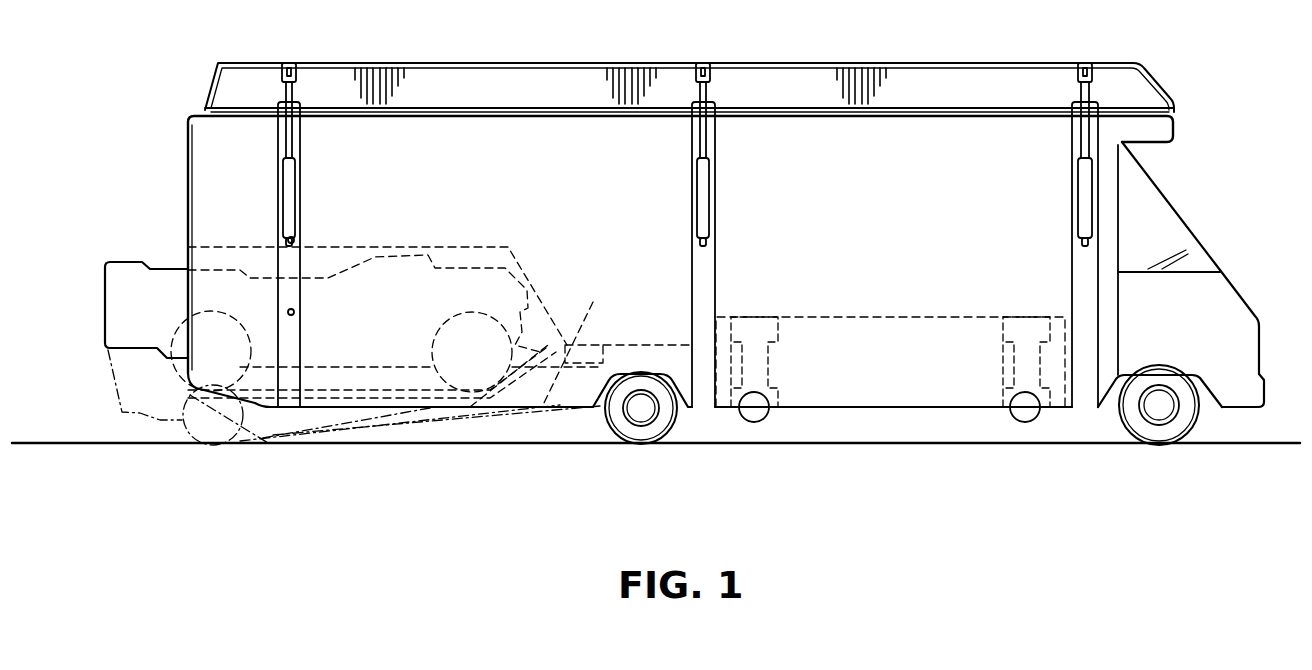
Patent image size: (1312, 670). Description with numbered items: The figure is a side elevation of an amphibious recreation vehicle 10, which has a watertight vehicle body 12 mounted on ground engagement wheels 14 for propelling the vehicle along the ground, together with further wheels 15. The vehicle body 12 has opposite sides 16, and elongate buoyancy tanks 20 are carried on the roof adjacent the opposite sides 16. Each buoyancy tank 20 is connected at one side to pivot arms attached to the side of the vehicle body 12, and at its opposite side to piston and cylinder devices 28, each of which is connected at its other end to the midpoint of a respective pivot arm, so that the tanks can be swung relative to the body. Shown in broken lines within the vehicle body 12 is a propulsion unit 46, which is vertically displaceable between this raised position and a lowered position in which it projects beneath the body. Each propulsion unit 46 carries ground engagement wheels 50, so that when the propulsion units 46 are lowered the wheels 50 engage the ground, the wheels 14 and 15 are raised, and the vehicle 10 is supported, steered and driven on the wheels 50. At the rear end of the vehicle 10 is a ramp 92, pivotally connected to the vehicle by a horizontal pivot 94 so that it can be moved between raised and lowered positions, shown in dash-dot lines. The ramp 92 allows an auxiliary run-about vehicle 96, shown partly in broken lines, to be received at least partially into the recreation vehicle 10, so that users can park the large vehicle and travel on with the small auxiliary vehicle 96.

The amphibious recreation vehicle 10 is at (1214, 188).
The vehicle body 12 is at (886, 211).
The ground engagement wheels 14 is at (1157, 440).
The wheels 15 is at (640, 440).
The opposite sides 16 is at (212, 155).
The buoyancy tanks 20 is at (497, 78).
The piston and cylinder device 28 is at (288, 196).
The propulsion unit 46 is at (889, 318).
The ground engagement wheels 50 is at (754, 423).
The ramp 92 is at (392, 430).
The horizontal pivot 94 is at (431, 327).
The auxiliary vehicle 96 is at (103, 248).